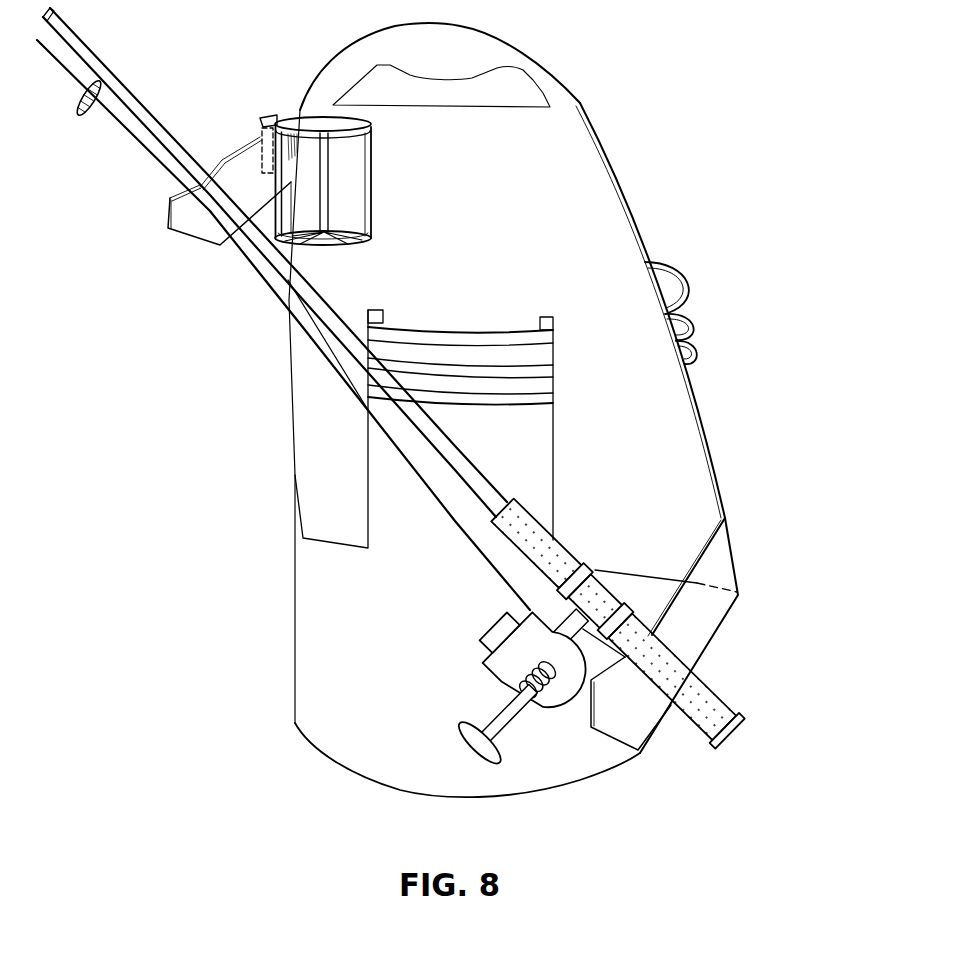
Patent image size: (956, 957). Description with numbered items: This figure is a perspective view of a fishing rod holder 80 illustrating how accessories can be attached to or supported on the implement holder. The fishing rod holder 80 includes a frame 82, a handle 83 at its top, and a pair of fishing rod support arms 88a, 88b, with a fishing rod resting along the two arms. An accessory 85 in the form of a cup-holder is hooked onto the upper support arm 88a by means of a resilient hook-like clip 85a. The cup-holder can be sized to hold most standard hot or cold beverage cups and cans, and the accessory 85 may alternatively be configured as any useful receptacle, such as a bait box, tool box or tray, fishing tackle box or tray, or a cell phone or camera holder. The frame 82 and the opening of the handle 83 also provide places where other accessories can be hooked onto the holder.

The fishing rod holder 80 is at (632, 123).
The frame 82 is at (620, 195).
The handle 83 is at (488, 57).
The accessory 85 is at (367, 175).
The resilient hook-like clip 85a is at (268, 118).
The fishing rod support arm 88a is at (188, 218).
The fishing rod support arm 88b is at (718, 556).